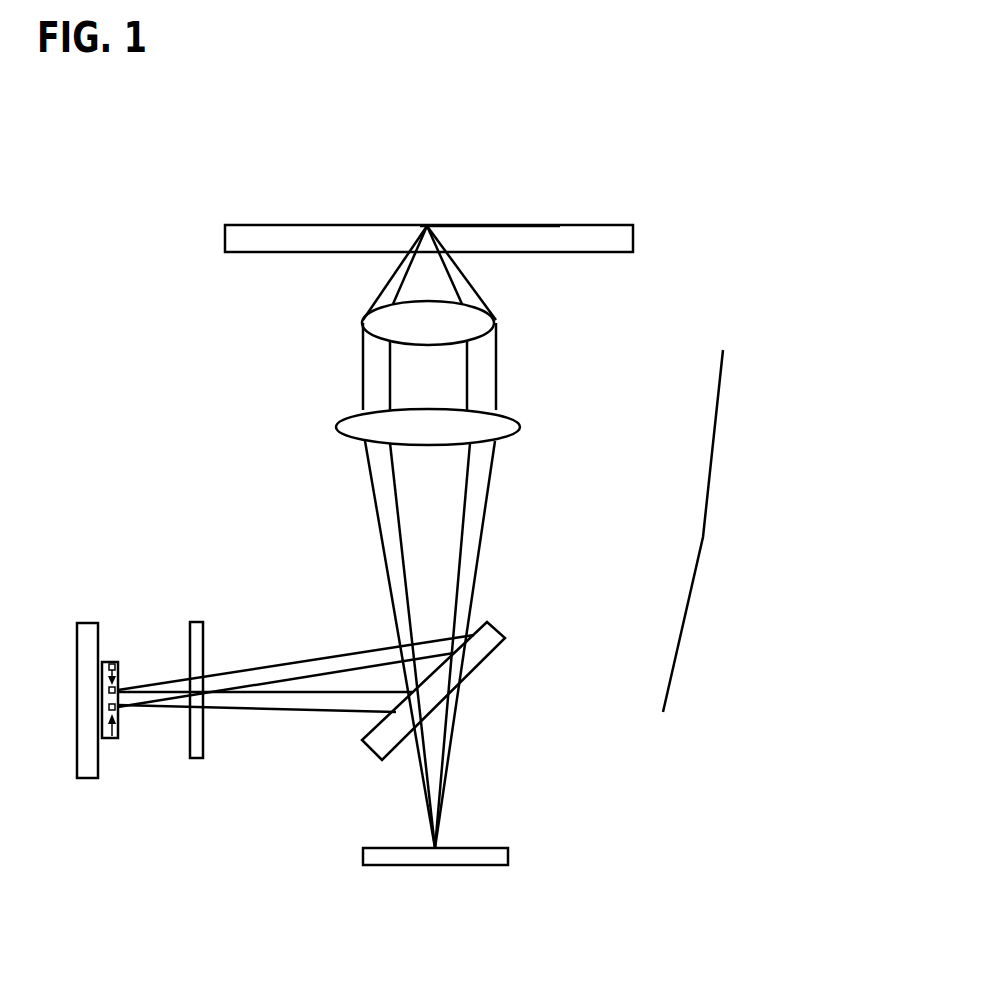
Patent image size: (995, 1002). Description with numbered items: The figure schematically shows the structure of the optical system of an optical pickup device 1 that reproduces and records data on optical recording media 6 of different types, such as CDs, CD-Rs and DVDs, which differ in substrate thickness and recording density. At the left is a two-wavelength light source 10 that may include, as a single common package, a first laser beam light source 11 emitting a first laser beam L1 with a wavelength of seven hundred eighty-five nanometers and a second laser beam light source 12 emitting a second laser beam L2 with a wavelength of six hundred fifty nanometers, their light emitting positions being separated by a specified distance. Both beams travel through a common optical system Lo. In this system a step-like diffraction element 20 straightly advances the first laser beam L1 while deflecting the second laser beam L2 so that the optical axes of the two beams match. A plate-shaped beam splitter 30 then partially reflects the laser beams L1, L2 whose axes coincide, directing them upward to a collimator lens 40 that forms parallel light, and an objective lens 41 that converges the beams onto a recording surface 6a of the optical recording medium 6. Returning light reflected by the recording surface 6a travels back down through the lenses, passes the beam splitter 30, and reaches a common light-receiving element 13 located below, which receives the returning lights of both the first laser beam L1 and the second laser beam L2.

The optical pickup device 1 is at (188, 392).
The optical recording medium 6 is at (660, 230).
The recording surface 6a is at (553, 226).
The objective lens 41 is at (517, 317).
The collimator lens 40 is at (540, 426).
The first laser beam L1 is at (465, 565).
The second laser beam L2 is at (503, 503).
The common optical system Lo is at (711, 531).
The plate-shaped beam splitter 30 is at (495, 665).
The common light-receiving element 13 is at (526, 851).
The step-like diffraction element 20 is at (192, 606).
The first laser beam light source 11 is at (113, 658).
The second laser beam light source 12 is at (110, 740).
The two-wavelength light source 10 is at (141, 684).